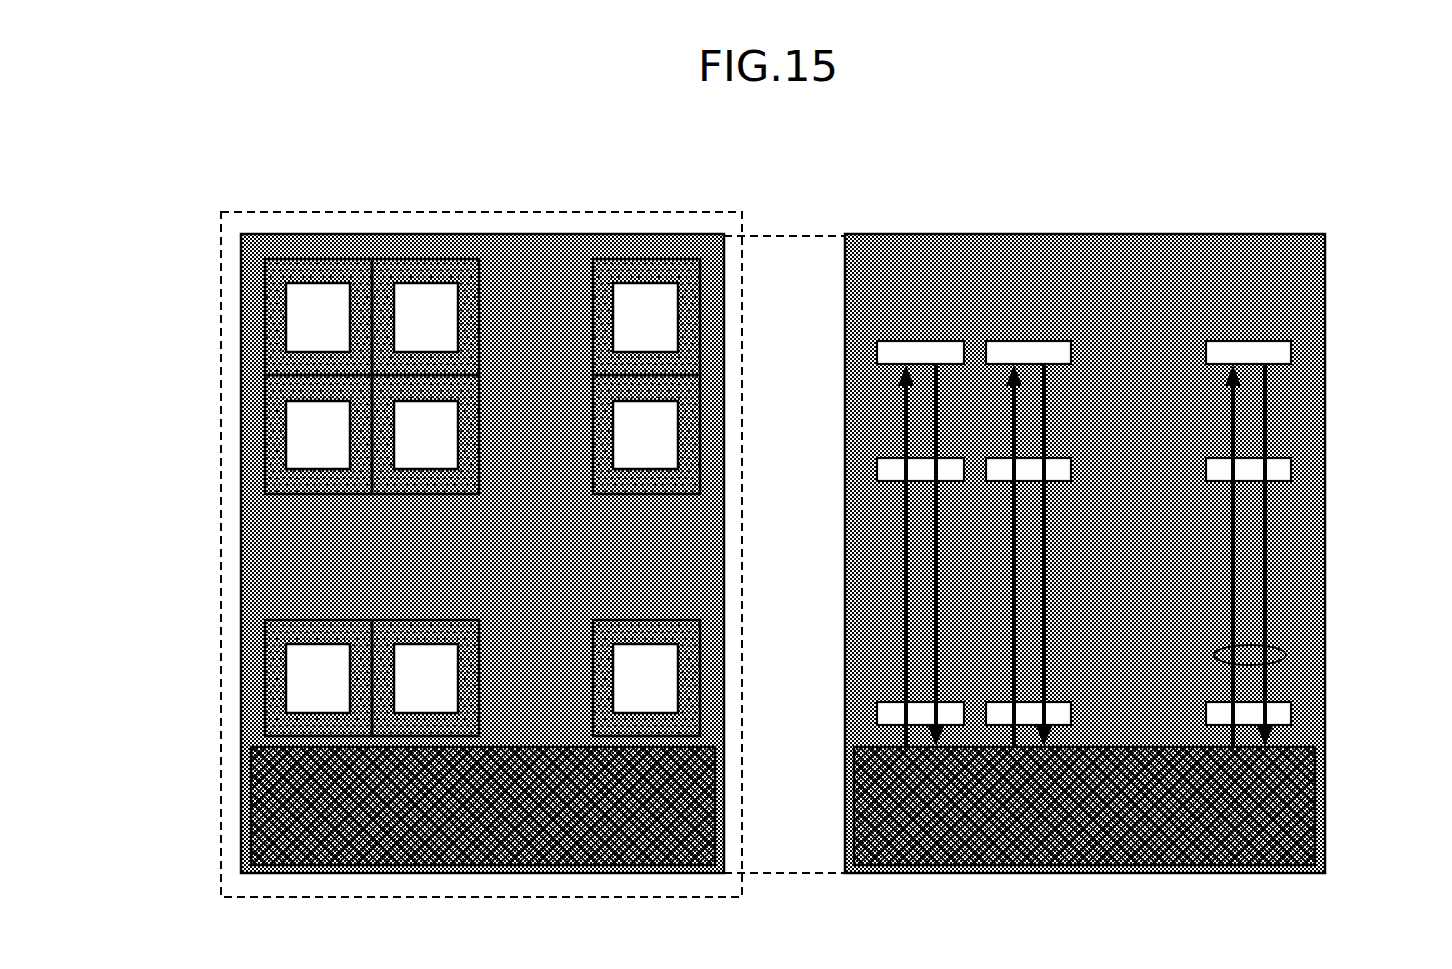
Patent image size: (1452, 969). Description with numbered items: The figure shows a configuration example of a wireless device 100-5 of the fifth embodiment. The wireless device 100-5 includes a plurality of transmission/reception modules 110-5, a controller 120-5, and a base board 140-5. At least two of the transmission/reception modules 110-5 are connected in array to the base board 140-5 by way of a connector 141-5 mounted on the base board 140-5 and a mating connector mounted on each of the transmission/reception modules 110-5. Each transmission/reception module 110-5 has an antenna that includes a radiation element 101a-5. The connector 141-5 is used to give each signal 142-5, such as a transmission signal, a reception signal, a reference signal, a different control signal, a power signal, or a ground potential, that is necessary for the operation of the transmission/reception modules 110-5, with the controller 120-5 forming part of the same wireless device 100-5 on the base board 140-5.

The wireless device 100-5 is at (680, 197).
The transmission/reception module 110-5 is at (257, 307).
The radiation element 101a-5 is at (278, 425).
The controller 120-5 is at (1308, 800).
The base board 140-5 is at (473, 226).
The connector 141-5 is at (912, 333).
The signal 142-5 is at (1278, 647).